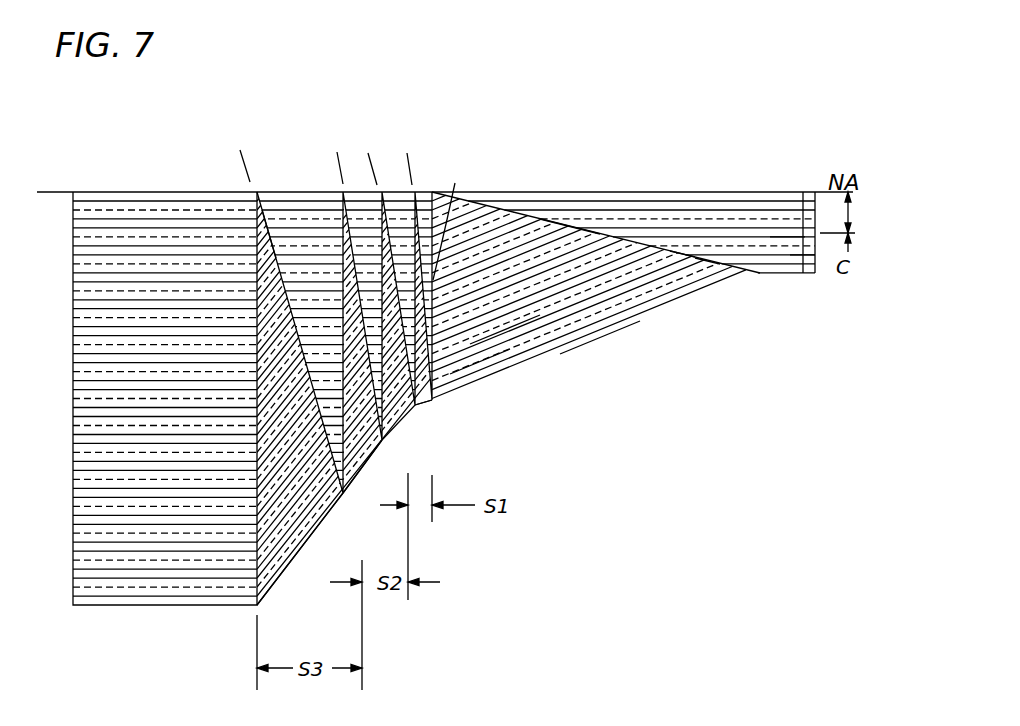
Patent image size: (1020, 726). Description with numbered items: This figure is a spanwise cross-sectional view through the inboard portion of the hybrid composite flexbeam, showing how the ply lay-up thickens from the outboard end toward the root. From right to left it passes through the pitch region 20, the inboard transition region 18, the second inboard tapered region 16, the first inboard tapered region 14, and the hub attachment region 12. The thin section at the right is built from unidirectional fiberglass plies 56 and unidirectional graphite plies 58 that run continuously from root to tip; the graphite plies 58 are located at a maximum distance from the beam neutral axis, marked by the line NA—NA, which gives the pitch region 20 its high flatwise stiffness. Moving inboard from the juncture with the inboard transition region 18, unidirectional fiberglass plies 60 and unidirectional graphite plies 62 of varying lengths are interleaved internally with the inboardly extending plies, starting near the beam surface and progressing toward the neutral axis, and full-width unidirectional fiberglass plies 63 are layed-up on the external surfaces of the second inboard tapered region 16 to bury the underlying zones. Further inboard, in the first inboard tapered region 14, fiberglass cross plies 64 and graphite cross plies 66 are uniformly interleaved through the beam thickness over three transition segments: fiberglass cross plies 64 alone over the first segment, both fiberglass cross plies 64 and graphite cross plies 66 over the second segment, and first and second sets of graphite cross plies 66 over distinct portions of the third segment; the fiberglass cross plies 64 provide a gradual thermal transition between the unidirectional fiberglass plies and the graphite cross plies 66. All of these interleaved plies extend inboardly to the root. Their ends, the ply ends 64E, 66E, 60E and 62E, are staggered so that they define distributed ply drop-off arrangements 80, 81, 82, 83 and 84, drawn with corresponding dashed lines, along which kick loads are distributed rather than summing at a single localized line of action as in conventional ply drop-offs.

The hub attachment region 12 is at (253, 106).
The first inboard tapered region 14 is at (432, 92).
The second inboard tapered region 16 is at (735, 60).
The inboard transition region 18 is at (803, 60).
The pitch region 20 is at (803, 107).
The unidirectional fiberglass plies 56 is at (788, 240).
The unidirectional graphite plies 58 is at (806, 258).
The unidirectional fiberglass plies 60 is at (502, 331).
The interleaved ply ends 60E is at (683, 254).
The unidirectional graphite plies 62 is at (476, 363).
The interleaved ply ends 62E is at (708, 262).
The unidirectional fiberglass plies 63 is at (600, 338).
The fiberglass cross plies 64 is at (404, 405).
The interleaved ply ends 64E is at (457, 220).
The graphite cross plies 66 is at (317, 527).
The interleaved ply ends 66E is at (276, 258).
The distributed ply drop-off arrangement 80 is at (578, 226).
The distributed ply drop-off arrangement 81 is at (409, 167).
The distributed ply drop-off arrangement 82 is at (371, 167).
The distributed ply drop-off arrangement 83 is at (337, 168).
The distributed ply drop-off arrangement 84 is at (243, 167).